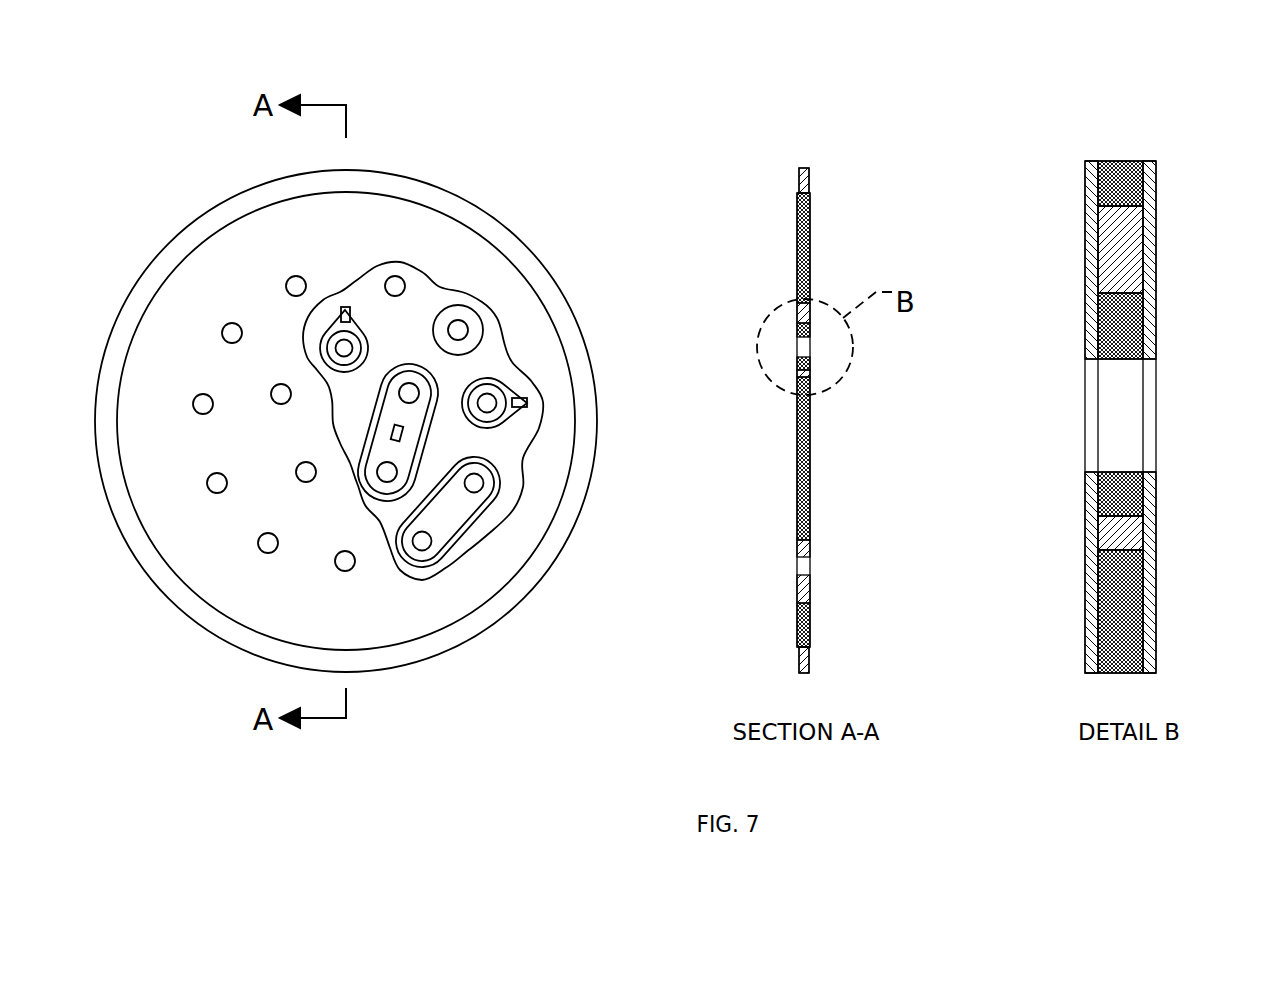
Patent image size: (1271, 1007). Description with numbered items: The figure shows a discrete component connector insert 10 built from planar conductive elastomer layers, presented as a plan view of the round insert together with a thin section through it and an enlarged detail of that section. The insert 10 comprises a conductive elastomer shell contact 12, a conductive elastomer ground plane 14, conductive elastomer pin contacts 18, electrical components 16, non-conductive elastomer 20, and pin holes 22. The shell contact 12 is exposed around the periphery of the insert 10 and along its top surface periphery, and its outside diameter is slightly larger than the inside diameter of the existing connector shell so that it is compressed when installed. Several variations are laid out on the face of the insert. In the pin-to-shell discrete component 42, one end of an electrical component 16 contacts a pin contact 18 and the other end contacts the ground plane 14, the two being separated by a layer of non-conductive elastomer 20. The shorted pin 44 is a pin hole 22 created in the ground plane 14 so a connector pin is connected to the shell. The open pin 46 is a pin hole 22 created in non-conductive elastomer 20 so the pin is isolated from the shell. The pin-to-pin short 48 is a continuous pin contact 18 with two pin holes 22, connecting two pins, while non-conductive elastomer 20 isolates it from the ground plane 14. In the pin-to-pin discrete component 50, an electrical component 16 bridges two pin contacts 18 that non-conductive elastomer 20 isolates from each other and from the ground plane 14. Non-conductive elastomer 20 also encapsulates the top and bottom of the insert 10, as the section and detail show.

The discrete component connector insert 10 is at (452, 386).
The conductive elastomer shell contact 12 is at (357, 436).
The conductive elastomer ground plane 14 is at (723, 392).
The electrical component 16 is at (668, 391).
The conductive elastomer pin contact 18 is at (663, 394).
The non-conductive elastomer 20 is at (649, 431).
The pin hole 22 is at (567, 417).
The pin-to-shell discrete component 42 is at (863, 417).
The shorted pin 44 is at (289, 190).
The open pin 46 is at (521, 287).
The pin-to-pin short 48 is at (490, 503).
The pin-to-pin discrete component 50 is at (493, 384).